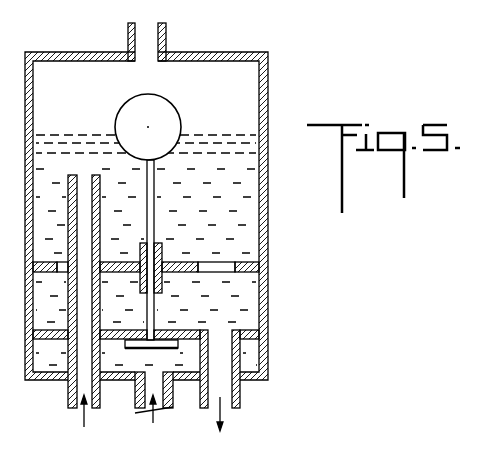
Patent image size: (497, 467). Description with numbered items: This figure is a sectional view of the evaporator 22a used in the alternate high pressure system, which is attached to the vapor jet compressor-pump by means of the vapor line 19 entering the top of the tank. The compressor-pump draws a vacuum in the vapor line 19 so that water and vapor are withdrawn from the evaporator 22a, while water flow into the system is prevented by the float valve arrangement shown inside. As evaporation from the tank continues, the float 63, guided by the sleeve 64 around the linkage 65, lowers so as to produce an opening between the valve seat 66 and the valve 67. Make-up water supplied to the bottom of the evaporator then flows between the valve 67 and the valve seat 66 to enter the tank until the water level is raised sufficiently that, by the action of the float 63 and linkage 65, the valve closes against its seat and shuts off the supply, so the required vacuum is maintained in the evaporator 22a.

The vapor line 19 is at (166, 35).
The evaporator 22a is at (283, 104).
The float 63 is at (173, 108).
The sleeve 64 is at (162, 247).
The linkage 65 is at (154, 183).
The valve seat 66 is at (190, 330).
The valve 67 is at (132, 343).